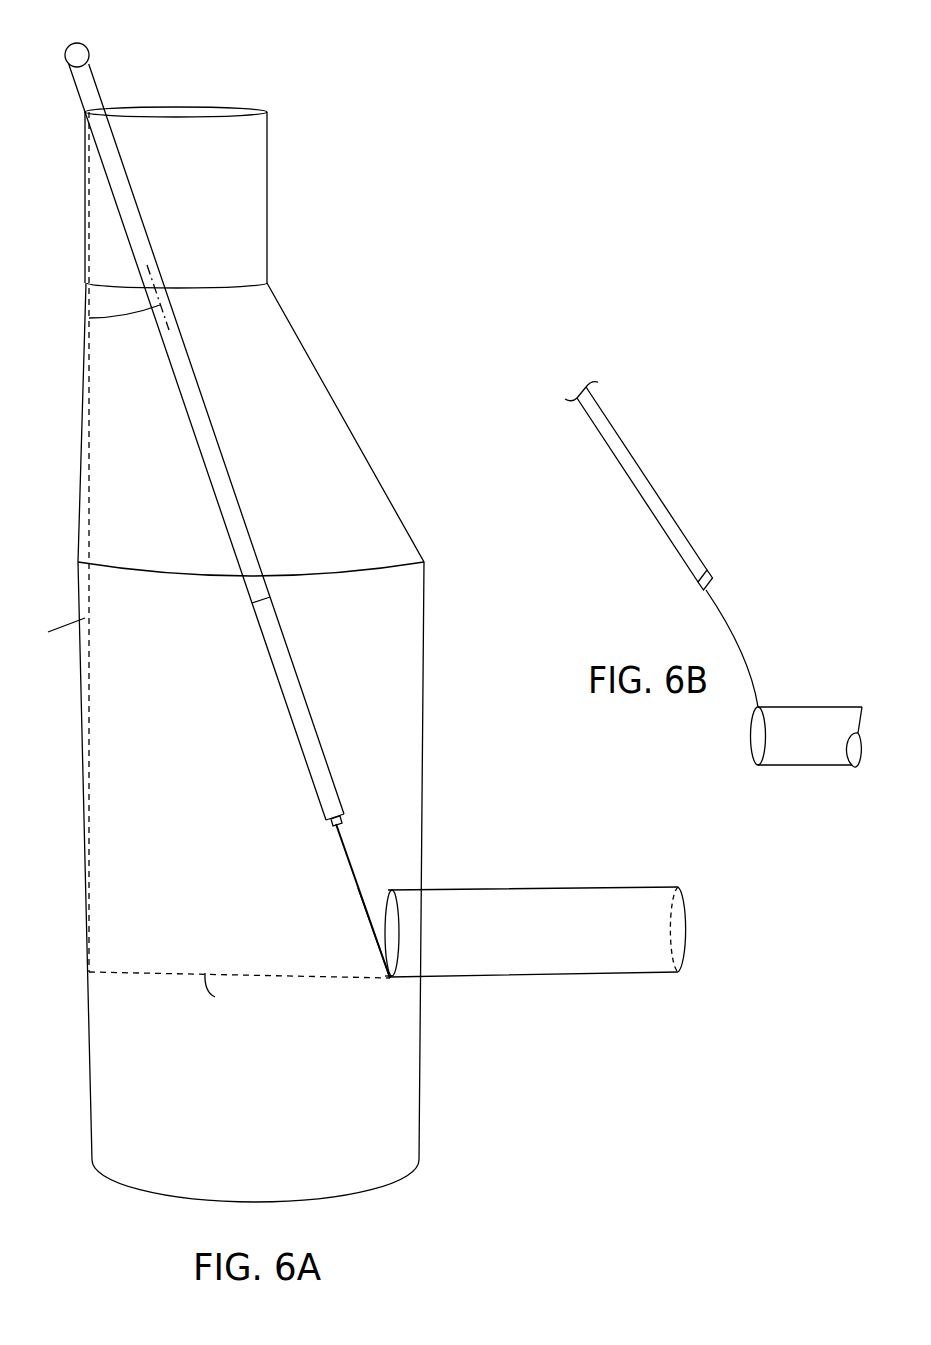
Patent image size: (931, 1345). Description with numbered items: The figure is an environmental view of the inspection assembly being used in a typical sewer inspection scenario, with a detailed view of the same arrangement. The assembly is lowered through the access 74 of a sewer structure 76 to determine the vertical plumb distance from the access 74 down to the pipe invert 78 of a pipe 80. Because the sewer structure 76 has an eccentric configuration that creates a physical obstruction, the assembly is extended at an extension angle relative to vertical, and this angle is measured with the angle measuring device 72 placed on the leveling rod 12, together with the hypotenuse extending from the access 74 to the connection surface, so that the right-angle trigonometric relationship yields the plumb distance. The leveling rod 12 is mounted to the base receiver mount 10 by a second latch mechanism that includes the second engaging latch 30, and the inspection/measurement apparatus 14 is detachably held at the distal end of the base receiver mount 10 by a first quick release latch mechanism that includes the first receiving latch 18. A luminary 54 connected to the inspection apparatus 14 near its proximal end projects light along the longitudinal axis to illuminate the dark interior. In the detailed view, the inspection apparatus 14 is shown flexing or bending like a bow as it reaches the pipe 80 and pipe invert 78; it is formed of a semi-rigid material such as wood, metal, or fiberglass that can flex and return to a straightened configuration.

In FIG. 6A, the base receiver mount 10 is at (271, 521).
In FIG. 6B, the base receiver mount 10 is at (657, 498).
In FIG. 6A, the leveling rod 12 is at (240, 535).
In FIG. 6A, the inspection/measurement apparatus 14 is at (363, 888).
In FIG. 6B, the inspection/measurement apparatus 14 is at (745, 647).
In FIG. 6A, the first receiving latch 18 is at (330, 808).
In FIG. 6B, the first receiving latch 18 is at (703, 583).
In FIG. 6A, the second engaging latch 30 is at (298, 705).
In FIG. 6A, the luminary 54 is at (340, 833).
In FIG. 6A, the angle measuring device 72 is at (90, 52).
In FIG. 6A, the access 74 is at (123, 110).
In FIG. 6A, the sewer structure 76 is at (405, 413).
In FIG. 6A, the pipe invert 78 is at (392, 978).
In FIG. 6B, the pipe invert 78 is at (758, 765).
In FIG. 6A, the pipe 80 is at (535, 902).
In FIG. 6B, the pipe 80 is at (812, 723).